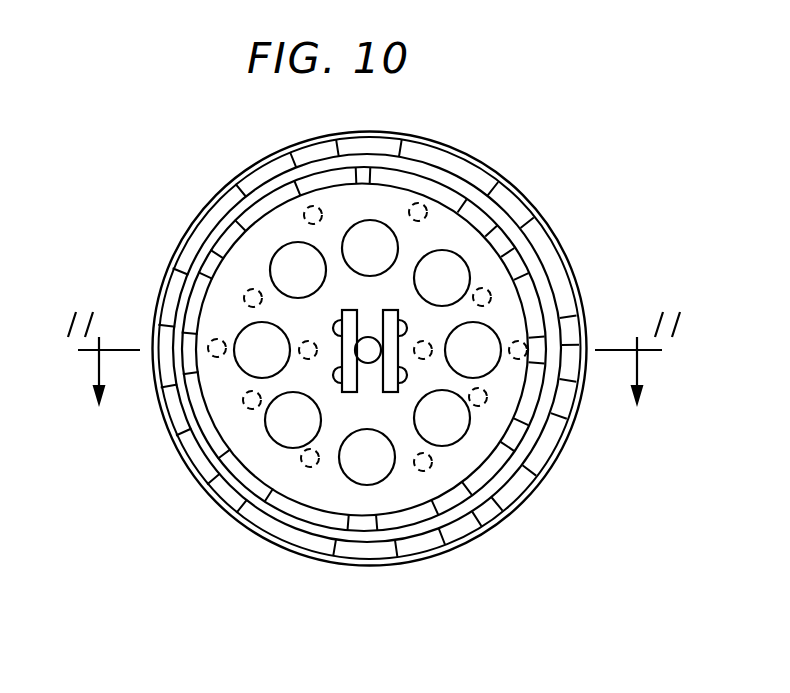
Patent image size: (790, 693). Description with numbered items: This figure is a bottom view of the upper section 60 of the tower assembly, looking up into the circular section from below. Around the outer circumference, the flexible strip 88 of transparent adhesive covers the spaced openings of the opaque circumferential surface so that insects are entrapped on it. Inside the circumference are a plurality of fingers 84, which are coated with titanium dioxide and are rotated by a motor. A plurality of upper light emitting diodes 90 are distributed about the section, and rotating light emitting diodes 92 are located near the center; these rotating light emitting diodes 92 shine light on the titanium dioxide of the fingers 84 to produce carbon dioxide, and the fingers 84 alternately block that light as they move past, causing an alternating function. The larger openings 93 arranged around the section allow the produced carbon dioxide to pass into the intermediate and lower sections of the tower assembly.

The upper section 60 is at (552, 225).
The fingers 84 is at (195, 302).
The flexible strip 88 is at (247, 533).
The upper light emitting diodes 90 is at (482, 290).
The rotating light emitting diodes 92 is at (405, 374).
The openings 93 is at (447, 437).